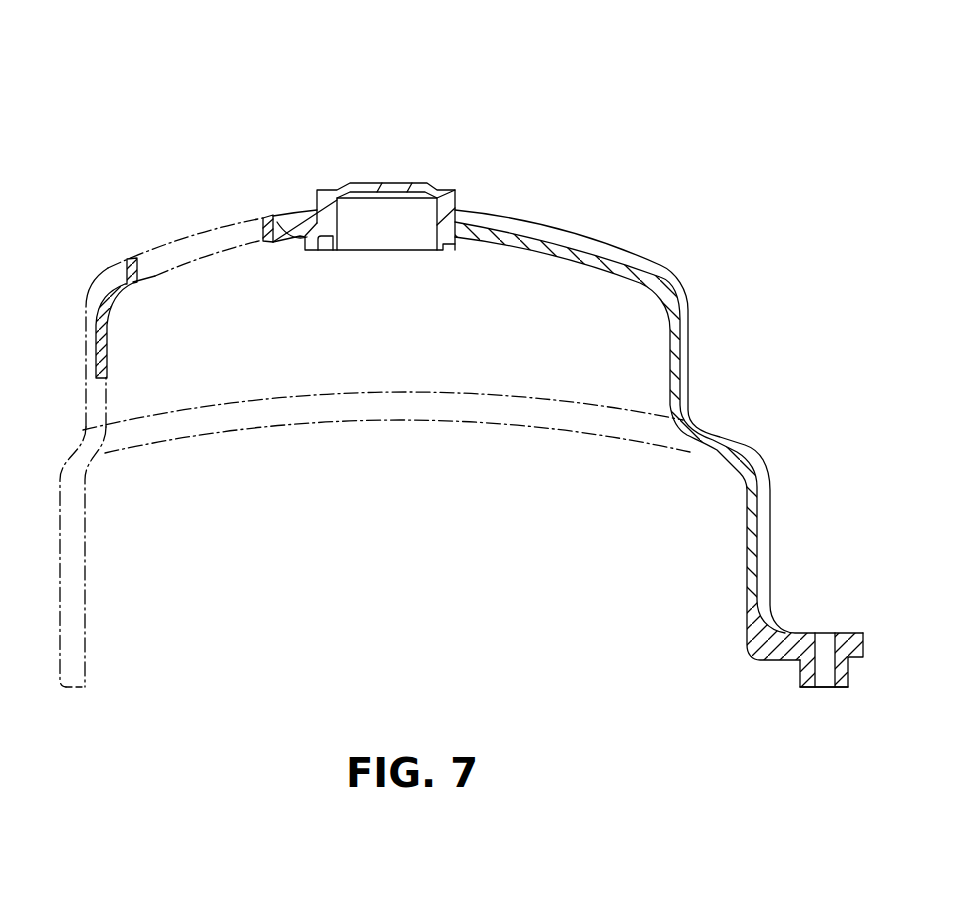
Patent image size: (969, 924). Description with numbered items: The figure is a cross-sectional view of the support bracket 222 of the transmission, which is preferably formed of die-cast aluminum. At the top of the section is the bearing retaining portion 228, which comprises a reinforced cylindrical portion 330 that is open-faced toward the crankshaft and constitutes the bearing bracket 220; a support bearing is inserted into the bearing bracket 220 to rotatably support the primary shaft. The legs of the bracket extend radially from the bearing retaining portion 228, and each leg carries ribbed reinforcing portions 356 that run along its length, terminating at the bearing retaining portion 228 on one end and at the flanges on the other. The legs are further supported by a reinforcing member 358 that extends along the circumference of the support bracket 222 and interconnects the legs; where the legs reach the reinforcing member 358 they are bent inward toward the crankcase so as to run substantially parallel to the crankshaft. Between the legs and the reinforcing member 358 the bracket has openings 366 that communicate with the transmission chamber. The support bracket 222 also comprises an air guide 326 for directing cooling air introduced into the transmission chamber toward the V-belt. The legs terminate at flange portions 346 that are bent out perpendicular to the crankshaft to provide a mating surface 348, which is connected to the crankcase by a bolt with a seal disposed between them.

The support bracket 222 is at (576, 120).
The bearing retaining portion 228 is at (443, 187).
The bearing bracket 220 is at (338, 226).
The reinforced cylindrical portion 330 is at (440, 252).
The openings 366 is at (252, 218).
The reinforcing member 358 is at (105, 275).
The ribbed reinforcing portions 356 is at (607, 240).
The air guide 326 is at (692, 304).
The flange portions 346 is at (843, 627).
The mating surface 348 is at (843, 688).